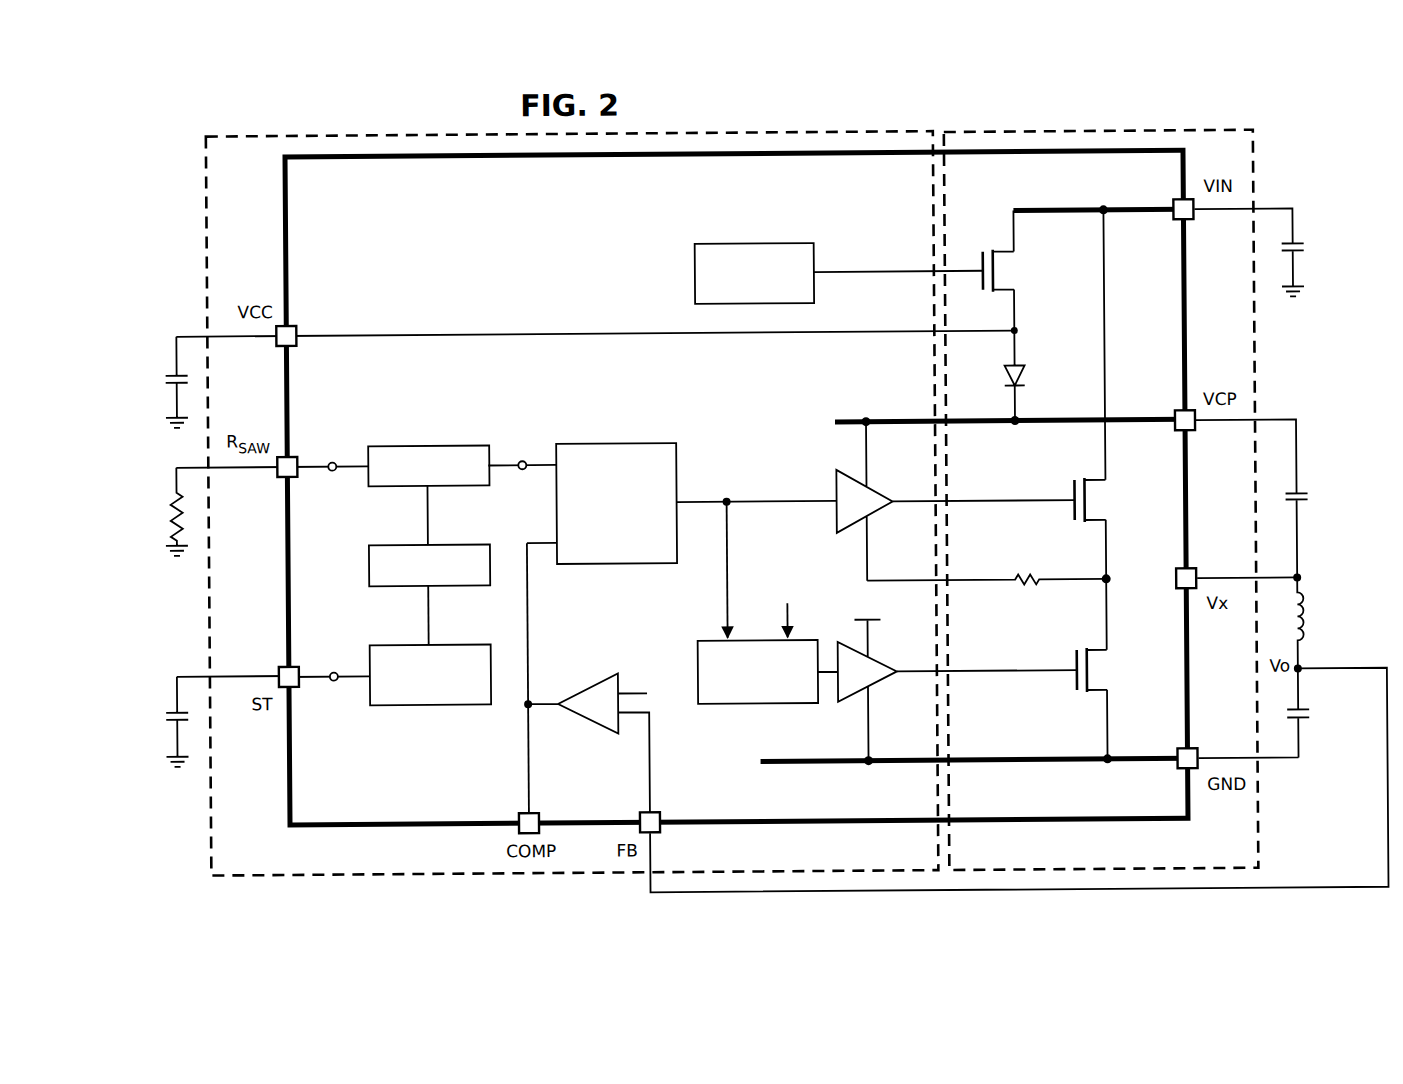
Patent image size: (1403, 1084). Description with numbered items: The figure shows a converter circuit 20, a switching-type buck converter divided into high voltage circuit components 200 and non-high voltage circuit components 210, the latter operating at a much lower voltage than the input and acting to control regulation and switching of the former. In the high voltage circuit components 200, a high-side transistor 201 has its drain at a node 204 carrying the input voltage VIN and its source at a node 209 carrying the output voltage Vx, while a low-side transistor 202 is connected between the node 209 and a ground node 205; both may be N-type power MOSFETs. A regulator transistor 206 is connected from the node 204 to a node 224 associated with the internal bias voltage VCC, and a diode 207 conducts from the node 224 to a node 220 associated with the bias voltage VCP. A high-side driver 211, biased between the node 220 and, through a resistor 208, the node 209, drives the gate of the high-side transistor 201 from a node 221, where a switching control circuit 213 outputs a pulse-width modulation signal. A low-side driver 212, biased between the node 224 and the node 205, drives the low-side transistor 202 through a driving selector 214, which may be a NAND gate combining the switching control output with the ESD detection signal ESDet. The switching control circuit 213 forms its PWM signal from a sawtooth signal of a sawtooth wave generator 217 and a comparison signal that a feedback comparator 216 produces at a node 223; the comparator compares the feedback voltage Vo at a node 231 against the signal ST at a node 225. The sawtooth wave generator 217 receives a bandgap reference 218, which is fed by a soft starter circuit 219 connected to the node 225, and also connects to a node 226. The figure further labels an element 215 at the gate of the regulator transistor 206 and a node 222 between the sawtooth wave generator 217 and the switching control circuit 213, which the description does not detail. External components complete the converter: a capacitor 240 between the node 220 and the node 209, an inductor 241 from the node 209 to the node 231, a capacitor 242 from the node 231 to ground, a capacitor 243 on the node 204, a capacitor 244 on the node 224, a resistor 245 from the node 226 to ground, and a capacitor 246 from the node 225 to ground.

The converter circuit 20 is at (689, 471).
The high voltage circuit components 200 is at (1113, 128).
The non-high voltage circuit components 210 is at (352, 130).
The high-side transistor 201 is at (1068, 510).
The low-side transistor 202 is at (1068, 680).
The node 204 is at (1106, 212).
The node 205 is at (1110, 770).
The regulator transistor 206 is at (983, 256).
The diode 207 is at (1024, 383).
The resistor 208 is at (1028, 592).
The node 209 is at (1112, 590).
The high-side driver 211 is at (882, 513).
The low-side driver 212 is at (882, 688).
The switching control circuit 213 is at (618, 568).
The driving selector 214 is at (760, 709).
The internal LDO 215 is at (755, 246).
The feedback comparator 216 is at (591, 726).
The sawtooth wave generator 217 is at (398, 446).
The bandgap reference 218 is at (398, 588).
The soft starter circuit 219 is at (420, 707).
The node 220 is at (873, 424).
The node 221 is at (730, 510).
The sawtooth output node 222 is at (518, 463).
The node 223 is at (516, 711).
The node 224 is at (1019, 333).
The node 225 is at (330, 683).
The node 226 is at (329, 462).
The node 231 is at (1306, 683).
The capacitor 240 is at (1306, 507).
The inductor 241 is at (1306, 645).
The capacitor 242 is at (1307, 722).
The capacitor 243 is at (1306, 256).
The capacitor 244 is at (164, 378).
The resistor 245 is at (166, 515).
The capacitor 246 is at (163, 716).